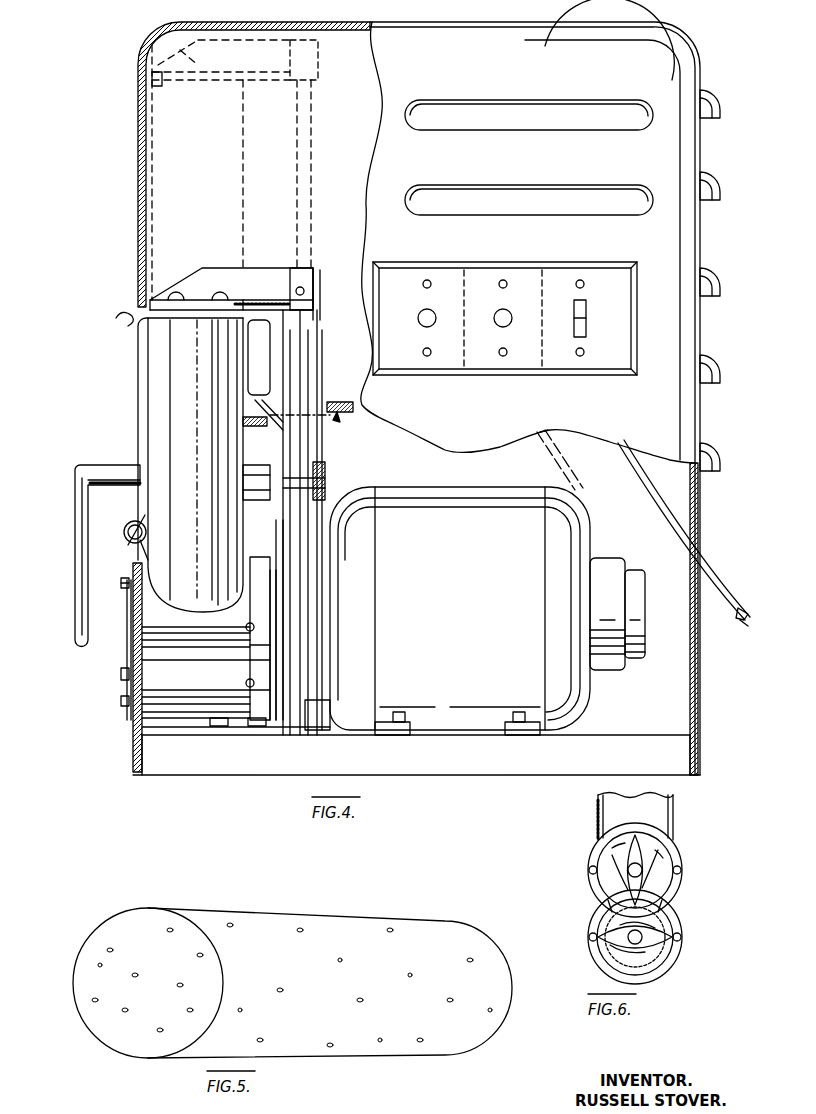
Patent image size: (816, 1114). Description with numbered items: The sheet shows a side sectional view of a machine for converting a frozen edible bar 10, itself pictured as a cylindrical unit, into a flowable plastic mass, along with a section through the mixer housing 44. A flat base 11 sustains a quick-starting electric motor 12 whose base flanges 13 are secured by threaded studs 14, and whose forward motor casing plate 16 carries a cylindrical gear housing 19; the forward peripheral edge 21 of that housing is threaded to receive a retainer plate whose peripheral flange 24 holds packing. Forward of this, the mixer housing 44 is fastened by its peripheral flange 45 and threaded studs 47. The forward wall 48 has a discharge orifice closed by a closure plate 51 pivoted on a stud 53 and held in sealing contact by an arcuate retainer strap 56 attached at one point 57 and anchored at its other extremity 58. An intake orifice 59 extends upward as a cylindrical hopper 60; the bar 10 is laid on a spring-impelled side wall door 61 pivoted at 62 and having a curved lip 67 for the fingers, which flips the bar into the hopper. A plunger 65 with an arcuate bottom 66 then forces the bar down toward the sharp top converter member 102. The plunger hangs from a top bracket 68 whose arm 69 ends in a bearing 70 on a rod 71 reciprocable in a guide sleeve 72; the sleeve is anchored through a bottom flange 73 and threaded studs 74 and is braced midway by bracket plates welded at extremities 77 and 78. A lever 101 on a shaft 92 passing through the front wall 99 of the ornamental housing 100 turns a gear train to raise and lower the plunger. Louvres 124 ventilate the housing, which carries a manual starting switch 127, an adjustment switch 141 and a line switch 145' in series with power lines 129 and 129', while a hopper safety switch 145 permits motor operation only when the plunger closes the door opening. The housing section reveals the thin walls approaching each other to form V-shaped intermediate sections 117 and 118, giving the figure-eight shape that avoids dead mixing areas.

In FIG. 5, the frozen substance unit or bar 10 is at (212, 920).
In FIG. 4, the base 11 is at (600, 735).
In FIG. 4, the electric motor 12 is at (410, 515).
In FIG. 4, the base flanges 13 is at (397, 735).
In FIG. 4, the threaded studs 14 is at (399, 712).
In FIG. 4, the forward motor casing plate 16 is at (360, 590).
In FIG. 4, the gear housing 19 is at (290, 617).
In FIG. 4, the forward peripheral edge 21 is at (272, 570).
In FIG. 4, the peripheral flange 24 is at (262, 557).
In FIG. 6, the mixer housing 44 is at (676, 950).
In FIG. 4, the peripheral flange 45 is at (245, 625).
In FIG. 6, the peripheral flange 45 is at (683, 868).
In FIG. 4, the threaded studs 47 is at (250, 623).
In FIG. 6, the threaded studs 47 is at (589, 870).
In FIG. 4, the forward wall 48 is at (133, 762).
In FIG. 4, the closure plate 51 is at (130, 720).
In FIG. 4, the stud 53 is at (121, 678).
In FIG. 4, the arcuate retainer strap 56 is at (128, 650).
In FIG. 4, the strap attachment 57 is at (121, 708).
In FIG. 4, the strap extremity 58 is at (123, 580).
In FIG. 6, the intake orifice 59 is at (664, 848).
In FIG. 4, the hopper 60 is at (192, 330).
In FIG. 6, the hopper 60 is at (675, 806).
In FIG. 4, the side wall door 61 is at (142, 388).
In FIG. 4, the door pivot 62 is at (124, 530).
In FIG. 4, the plunger 65 is at (232, 152).
In FIG. 6, the plunger 65 is at (598, 815).
In FIG. 6, the arcuate bottom 66 is at (606, 838).
In FIG. 4, the curved lip 67 is at (122, 322).
In FIG. 4, the top bracket 68 is at (170, 48).
In FIG. 4, the bracket arm 69 is at (240, 85).
In FIG. 4, the bearing 70 is at (310, 68).
In FIG. 4, the rod 71 is at (307, 165).
In FIG. 4, the guide sleeve 72 is at (300, 368).
In FIG. 4, the bottom flange 73 is at (325, 720).
In FIG. 4, the threaded studs 74 is at (217, 727).
In FIG. 4, the bracket plate extremity 77 is at (292, 470).
In FIG. 4, the bracket plate extremity 78 is at (325, 483).
In FIG. 4, the shaft 92 is at (255, 490).
In FIG. 4, the front wall 99 is at (137, 172).
In FIG. 4, the housing or shell 100 is at (698, 60).
In FIG. 4, the lever 101 is at (80, 583).
In FIG. 6, the top converter member 102 is at (645, 845).
In FIG. 6, the intermediate section 117 is at (608, 905).
In FIG. 6, the intermediate section 118 is at (664, 905).
In FIG. 4, the louvres 124 is at (481, 112).
In FIG. 4, the manual switch 127 is at (427, 310).
In FIG. 4, the power line 129 is at (643, 549).
In FIG. 4, the main wire line 129' is at (733, 595).
In FIG. 4, the manual switch 141 is at (503, 310).
In FIG. 4, the switch 145 is at (302, 357).
In FIG. 4, the line switch 145' is at (597, 288).